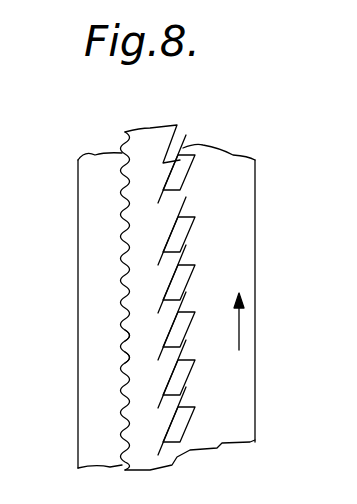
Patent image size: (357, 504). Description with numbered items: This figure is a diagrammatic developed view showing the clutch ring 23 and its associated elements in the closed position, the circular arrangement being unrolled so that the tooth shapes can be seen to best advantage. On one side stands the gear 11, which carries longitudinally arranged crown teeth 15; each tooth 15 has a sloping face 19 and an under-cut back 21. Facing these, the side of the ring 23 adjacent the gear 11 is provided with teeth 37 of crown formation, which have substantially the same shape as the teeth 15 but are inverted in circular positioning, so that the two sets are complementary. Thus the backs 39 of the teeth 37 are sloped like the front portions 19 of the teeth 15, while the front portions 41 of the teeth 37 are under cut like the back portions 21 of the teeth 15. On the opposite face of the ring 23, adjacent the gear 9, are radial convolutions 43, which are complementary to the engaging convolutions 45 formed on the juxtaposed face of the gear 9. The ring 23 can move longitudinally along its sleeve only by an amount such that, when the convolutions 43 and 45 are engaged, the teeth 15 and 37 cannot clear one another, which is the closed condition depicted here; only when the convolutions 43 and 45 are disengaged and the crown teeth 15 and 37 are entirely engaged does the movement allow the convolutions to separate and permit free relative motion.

The gear 9 is at (82, 240).
The gear 11 is at (252, 283).
The crown teeth 15 is at (185, 208).
The sloping face 19 is at (200, 235).
The under-cut back 21 is at (188, 176).
The clutch ring 23 is at (145, 130).
The teeth 37 is at (190, 312).
The backs 39 is at (185, 348).
The front portions 41 is at (186, 274).
The radial convolutions 43 is at (170, 312).
The convolutions 45 is at (168, 165).